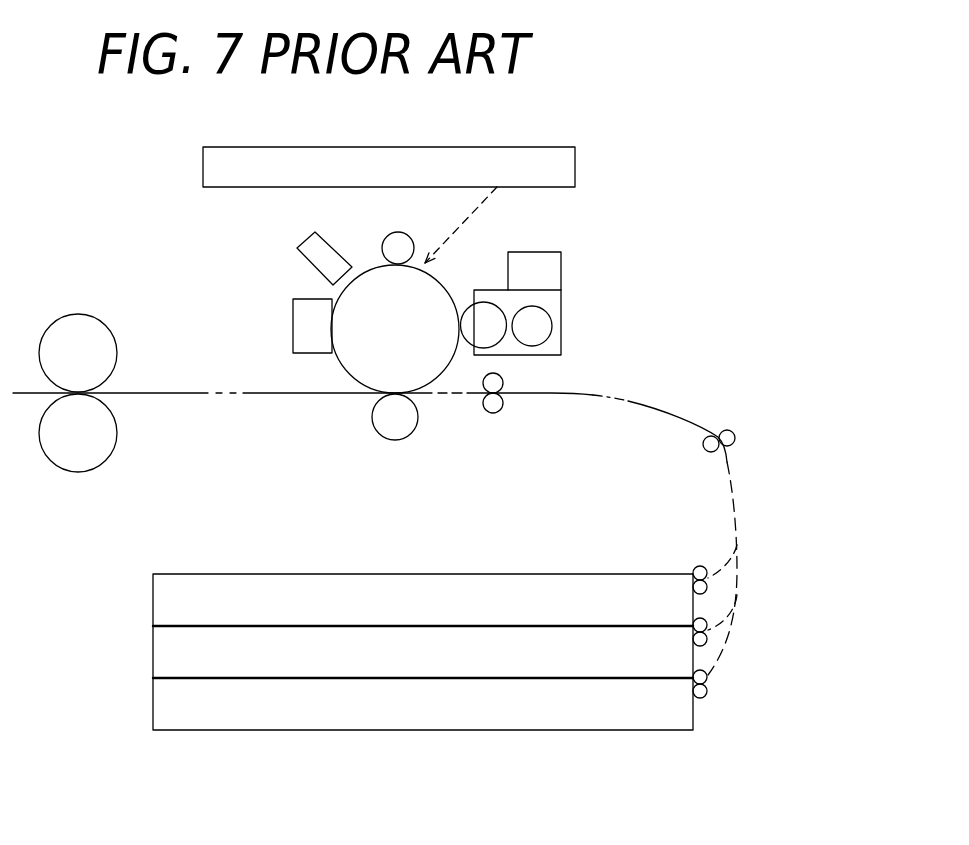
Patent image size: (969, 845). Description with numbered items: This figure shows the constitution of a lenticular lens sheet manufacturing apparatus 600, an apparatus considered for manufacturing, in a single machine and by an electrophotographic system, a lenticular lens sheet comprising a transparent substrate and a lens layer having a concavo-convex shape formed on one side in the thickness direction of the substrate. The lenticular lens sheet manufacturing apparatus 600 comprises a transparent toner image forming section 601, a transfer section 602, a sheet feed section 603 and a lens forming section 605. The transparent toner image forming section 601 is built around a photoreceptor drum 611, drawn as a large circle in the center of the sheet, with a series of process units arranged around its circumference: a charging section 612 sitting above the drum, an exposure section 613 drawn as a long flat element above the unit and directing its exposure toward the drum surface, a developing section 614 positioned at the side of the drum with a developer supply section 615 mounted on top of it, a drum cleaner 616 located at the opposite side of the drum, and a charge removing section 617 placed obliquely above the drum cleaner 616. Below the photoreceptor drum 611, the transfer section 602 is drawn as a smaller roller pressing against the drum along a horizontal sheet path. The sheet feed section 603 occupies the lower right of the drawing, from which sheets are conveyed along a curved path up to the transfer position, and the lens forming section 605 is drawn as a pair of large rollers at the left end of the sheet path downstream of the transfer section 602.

The lenticular lens sheet manufacturing apparatus 600 is at (599, 107).
The transparent toner image forming section 601 is at (623, 202).
The transfer section 602 is at (428, 442).
The sheet feed section 603 is at (747, 553).
The lens forming section 605 is at (118, 467).
The photoreceptor drum 611 is at (378, 277).
The charging section 612 is at (393, 238).
The exposure section 613 is at (428, 157).
The developing section 614 is at (552, 270).
The developer supply section 615 is at (528, 260).
The drum cleaner 616 is at (293, 317).
The charge removing section 617 is at (310, 245).